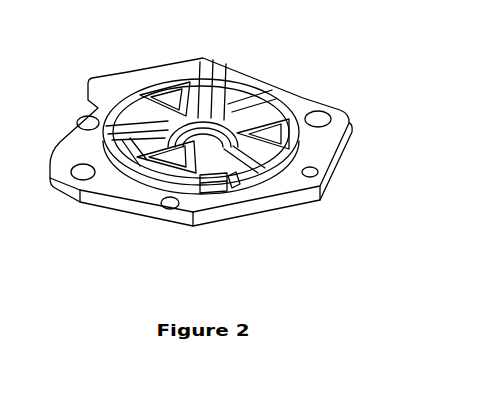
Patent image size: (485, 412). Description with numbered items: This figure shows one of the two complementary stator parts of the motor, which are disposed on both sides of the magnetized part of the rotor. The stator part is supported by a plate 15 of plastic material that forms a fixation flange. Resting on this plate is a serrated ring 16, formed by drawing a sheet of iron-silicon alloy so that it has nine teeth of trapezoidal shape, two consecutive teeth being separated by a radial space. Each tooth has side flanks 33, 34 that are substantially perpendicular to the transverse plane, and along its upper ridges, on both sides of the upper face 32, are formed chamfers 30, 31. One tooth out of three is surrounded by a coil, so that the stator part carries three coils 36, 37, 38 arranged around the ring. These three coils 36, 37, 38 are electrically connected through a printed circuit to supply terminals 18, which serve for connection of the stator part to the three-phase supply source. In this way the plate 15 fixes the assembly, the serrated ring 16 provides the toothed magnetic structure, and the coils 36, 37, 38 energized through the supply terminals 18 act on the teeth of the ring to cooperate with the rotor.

The plate 15 is at (315, 158).
The serrated ring 16 is at (278, 96).
The supply terminals 18 is at (128, 57).
The chamfer 30 is at (200, 80).
The chamfer 31 is at (238, 93).
The upper face 32 is at (214, 80).
The side flank 33 is at (224, 178).
The side flank 34 is at (203, 180).
The coil 36 is at (140, 93).
The coil 37 is at (300, 106).
The coil 38 is at (150, 172).